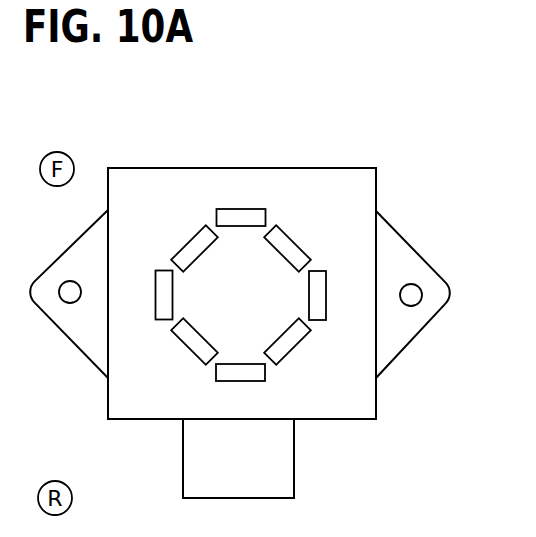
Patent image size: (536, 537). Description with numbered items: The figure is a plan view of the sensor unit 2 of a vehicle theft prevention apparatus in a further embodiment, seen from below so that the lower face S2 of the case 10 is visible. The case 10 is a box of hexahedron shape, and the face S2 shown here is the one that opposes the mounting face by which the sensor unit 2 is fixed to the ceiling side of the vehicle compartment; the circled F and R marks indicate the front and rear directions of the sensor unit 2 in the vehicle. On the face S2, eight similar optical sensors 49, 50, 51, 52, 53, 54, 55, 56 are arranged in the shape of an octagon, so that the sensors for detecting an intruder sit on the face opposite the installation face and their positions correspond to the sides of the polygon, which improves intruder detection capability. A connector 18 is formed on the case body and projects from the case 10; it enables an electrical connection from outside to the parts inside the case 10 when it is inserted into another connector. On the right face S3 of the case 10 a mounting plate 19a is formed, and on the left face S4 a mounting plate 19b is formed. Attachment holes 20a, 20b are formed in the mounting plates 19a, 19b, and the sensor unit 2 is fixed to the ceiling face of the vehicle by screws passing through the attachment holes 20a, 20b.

The sensor unit 2 is at (374, 148).
The case 10 is at (376, 186).
The connector 18 is at (295, 455).
The mounting plate 19a is at (426, 338).
The mounting plate 19b is at (66, 338).
The attachment hole 20a is at (419, 288).
The attachment hole 20b is at (62, 284).
The optical sensor 49 is at (233, 209).
The optical sensor 50 is at (187, 240).
The optical sensor 51 is at (155, 295).
The optical sensor 52 is at (183, 345).
The optical sensor 53 is at (232, 381).
The optical sensor 54 is at (298, 343).
The optical sensor 55 is at (328, 290).
The optical sensor 56 is at (297, 238).
The lower face S2 is at (358, 412).
The right face S3 is at (376, 393).
The left face S4 is at (108, 395).